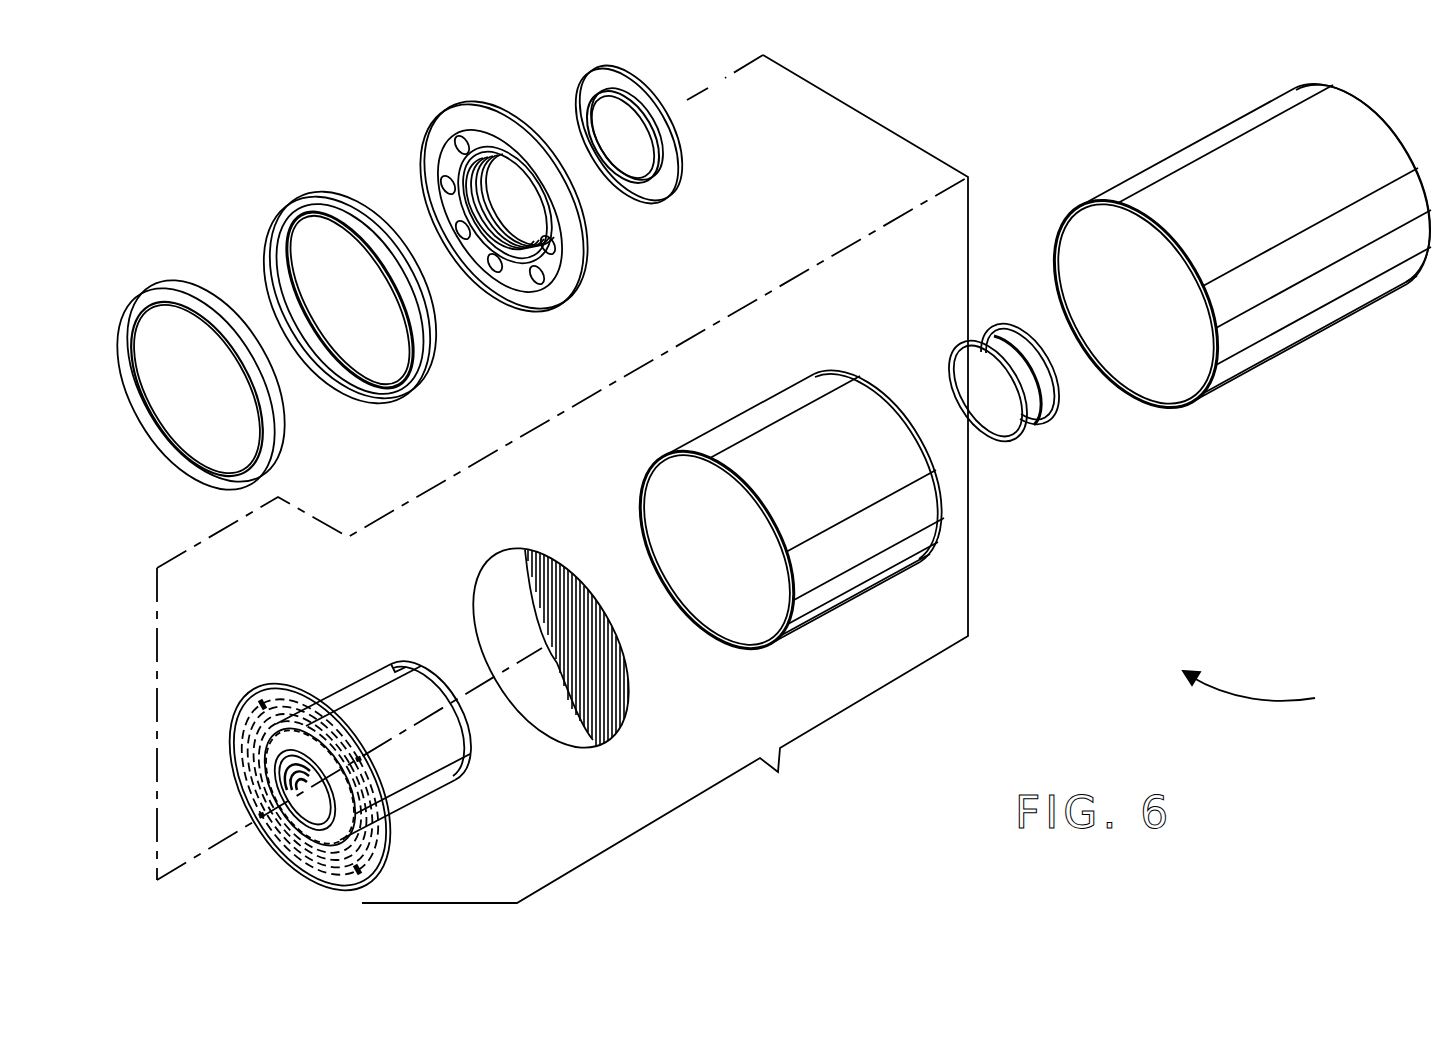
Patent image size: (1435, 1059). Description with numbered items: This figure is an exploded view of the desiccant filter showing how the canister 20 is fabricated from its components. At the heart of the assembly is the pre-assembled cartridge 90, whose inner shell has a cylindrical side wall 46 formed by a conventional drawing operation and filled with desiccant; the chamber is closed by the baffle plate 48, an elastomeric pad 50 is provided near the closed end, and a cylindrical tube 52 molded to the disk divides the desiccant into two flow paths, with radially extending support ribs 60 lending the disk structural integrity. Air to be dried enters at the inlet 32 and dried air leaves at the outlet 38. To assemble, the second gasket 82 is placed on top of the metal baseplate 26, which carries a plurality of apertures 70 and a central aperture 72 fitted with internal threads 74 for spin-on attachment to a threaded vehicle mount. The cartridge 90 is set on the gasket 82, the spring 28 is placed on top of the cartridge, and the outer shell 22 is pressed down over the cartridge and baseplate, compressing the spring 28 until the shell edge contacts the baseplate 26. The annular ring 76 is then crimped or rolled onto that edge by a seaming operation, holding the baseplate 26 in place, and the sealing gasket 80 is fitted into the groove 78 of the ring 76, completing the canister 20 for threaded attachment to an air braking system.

The canister 20 is at (1315, 698).
The outer shell 22 is at (1332, 327).
The baseplate 26 is at (425, 147).
The spring 28 is at (1040, 427).
The inlet 32 is at (238, 757).
The outlet 38 is at (307, 853).
The cylindrical side wall 46 is at (858, 620).
The baffle plate 48 is at (250, 697).
The elastomeric pad 50 is at (538, 700).
The cylindrical tube 52 is at (350, 693).
The support ribs 60 is at (367, 830).
The apertures 70 is at (523, 273).
The central aperture 72 is at (527, 222).
The internal threads 74 is at (493, 183).
The annular ring 76 is at (437, 336).
The groove 78 is at (290, 213).
The sealing gasket 80 is at (195, 284).
The second gasket 82 is at (663, 173).
The pre-assembled cartridge 90 is at (778, 772).